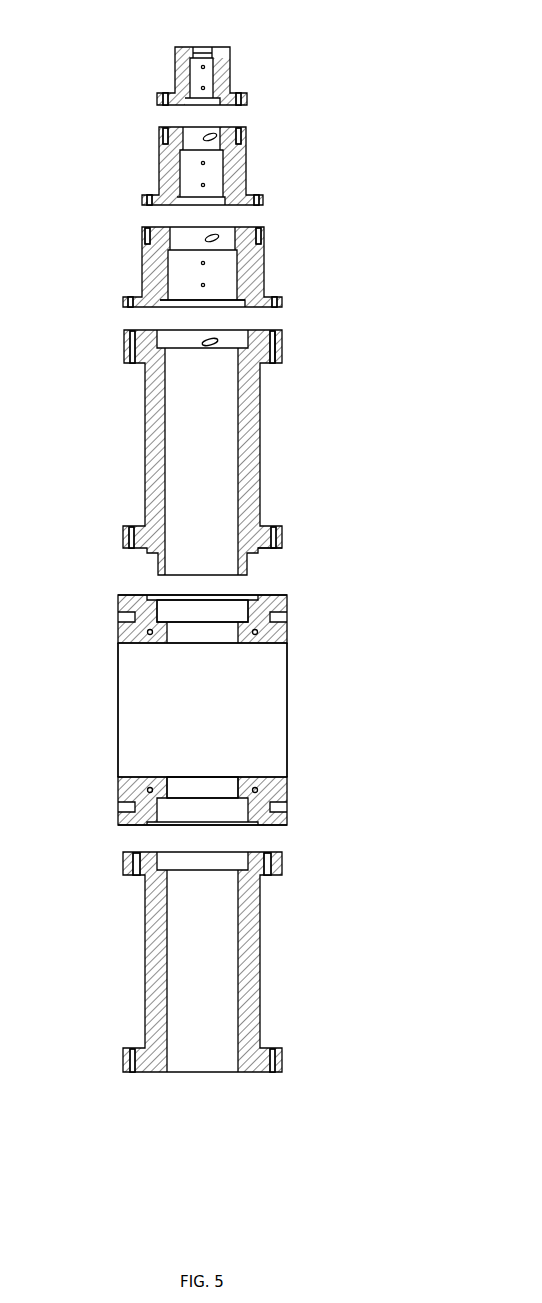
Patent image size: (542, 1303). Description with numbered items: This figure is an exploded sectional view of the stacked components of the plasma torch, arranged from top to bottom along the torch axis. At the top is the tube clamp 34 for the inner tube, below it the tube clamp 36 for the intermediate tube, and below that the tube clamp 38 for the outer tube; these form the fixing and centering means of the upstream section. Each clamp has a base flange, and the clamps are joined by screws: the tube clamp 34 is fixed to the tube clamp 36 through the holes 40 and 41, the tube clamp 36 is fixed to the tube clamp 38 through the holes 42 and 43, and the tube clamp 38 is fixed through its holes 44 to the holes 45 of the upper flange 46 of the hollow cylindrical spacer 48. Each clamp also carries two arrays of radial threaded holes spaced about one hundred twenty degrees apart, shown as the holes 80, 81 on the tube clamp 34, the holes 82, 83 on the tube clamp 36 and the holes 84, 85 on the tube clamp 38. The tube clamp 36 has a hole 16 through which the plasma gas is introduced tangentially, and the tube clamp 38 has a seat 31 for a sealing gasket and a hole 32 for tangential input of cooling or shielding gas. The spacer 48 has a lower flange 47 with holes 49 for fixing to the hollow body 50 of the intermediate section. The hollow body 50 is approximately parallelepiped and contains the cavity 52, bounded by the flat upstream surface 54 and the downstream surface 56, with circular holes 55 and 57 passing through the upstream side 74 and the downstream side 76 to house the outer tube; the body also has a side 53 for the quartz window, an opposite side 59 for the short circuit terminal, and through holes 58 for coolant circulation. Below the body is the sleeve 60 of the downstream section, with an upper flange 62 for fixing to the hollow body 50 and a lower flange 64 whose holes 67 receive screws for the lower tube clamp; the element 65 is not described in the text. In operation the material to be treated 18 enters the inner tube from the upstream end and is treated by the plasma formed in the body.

The hole 16 is at (207, 139).
The material to be treated 18 is at (208, 344).
The seat 31 is at (205, 305).
The hole 32 is at (208, 240).
The tube clamp 34 is at (222, 75).
The tube clamp 36 is at (238, 172).
The tube clamp 38 is at (252, 275).
The holes 40 is at (167, 94).
The holes 41 is at (166, 132).
The holes 42 is at (150, 196).
The holes 43 is at (147, 233).
The holes 44 is at (130, 298).
The holes 45 is at (132, 352).
The upper flange 46 is at (278, 355).
The lower flange 47 is at (280, 545).
The hollow cylindrical spacer 48 is at (248, 458).
The holes 49 is at (131, 528).
The hollow body 50 is at (231, 712).
The cavity 52 is at (202, 710).
The side 53 is at (118, 706).
The upstream surface 54 is at (130, 652).
The circular hole 55 is at (190, 640).
The downstream surface 56 is at (140, 773).
The circular hole 57 is at (200, 778).
The through holes 58 is at (148, 632).
The side 59 is at (287, 735).
The sleeve 60 is at (136, 955).
The upper flange 62 is at (278, 868).
The lower flange 64 is at (276, 1060).
The top flange bolt hole left 65 is at (136, 872).
The holes 67 is at (131, 1066).
The upstream side 74 is at (125, 597).
The downstream side 76 is at (125, 824).
The threaded holes 80 is at (203, 67).
The threaded holes 81 is at (203, 88).
The threaded holes 82 is at (203, 163).
The threaded holes 83 is at (203, 185).
The threaded holes 84 is at (203, 263).
The threaded holes 85 is at (203, 285).